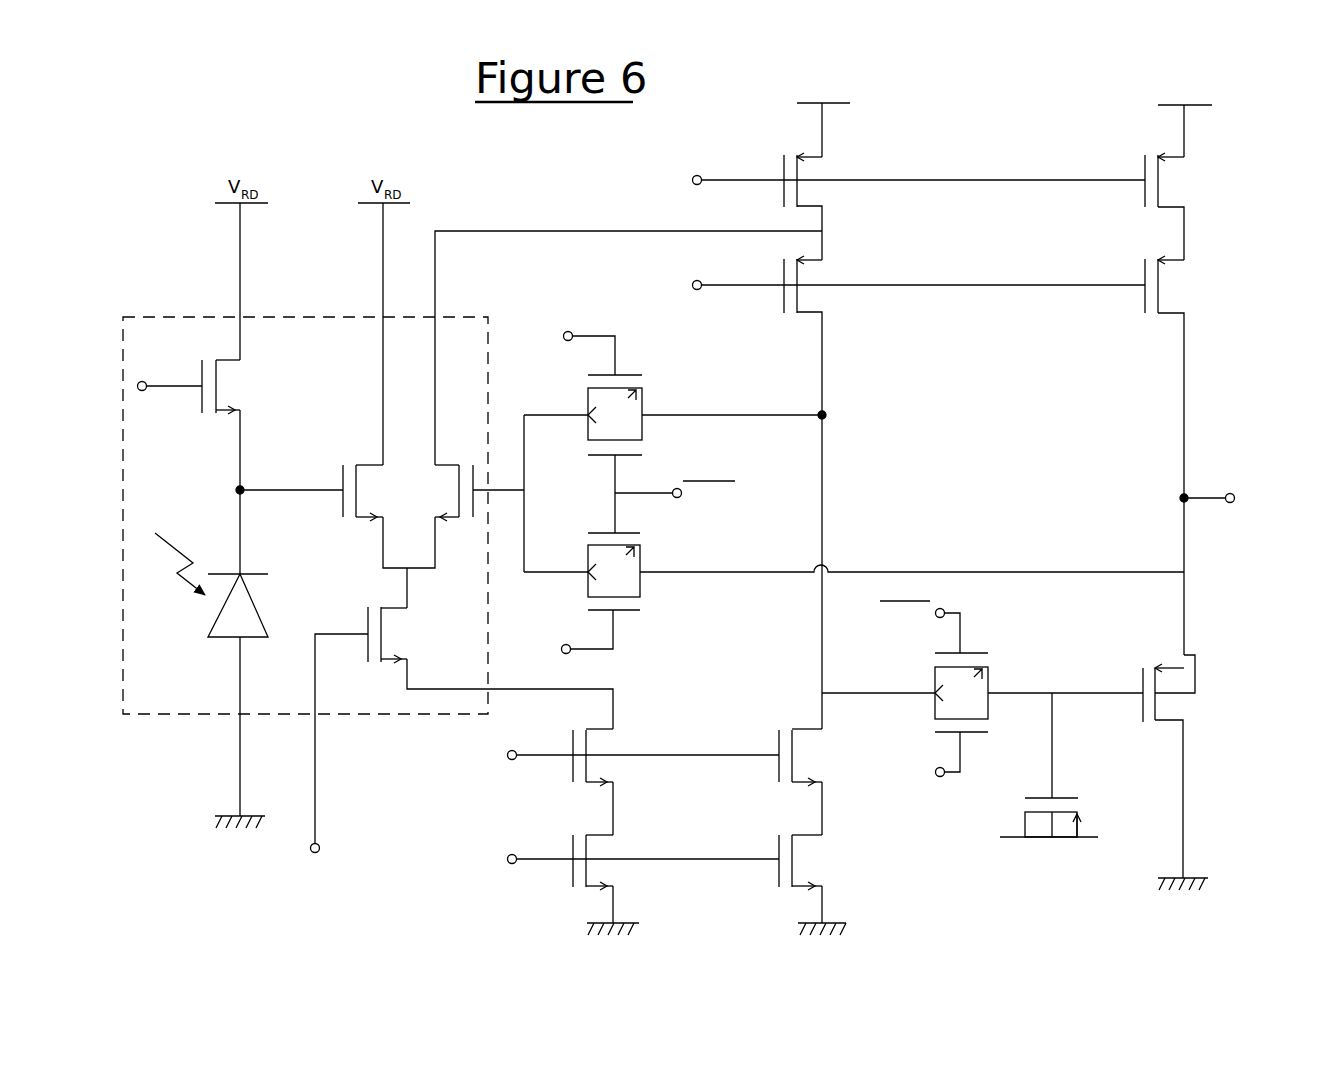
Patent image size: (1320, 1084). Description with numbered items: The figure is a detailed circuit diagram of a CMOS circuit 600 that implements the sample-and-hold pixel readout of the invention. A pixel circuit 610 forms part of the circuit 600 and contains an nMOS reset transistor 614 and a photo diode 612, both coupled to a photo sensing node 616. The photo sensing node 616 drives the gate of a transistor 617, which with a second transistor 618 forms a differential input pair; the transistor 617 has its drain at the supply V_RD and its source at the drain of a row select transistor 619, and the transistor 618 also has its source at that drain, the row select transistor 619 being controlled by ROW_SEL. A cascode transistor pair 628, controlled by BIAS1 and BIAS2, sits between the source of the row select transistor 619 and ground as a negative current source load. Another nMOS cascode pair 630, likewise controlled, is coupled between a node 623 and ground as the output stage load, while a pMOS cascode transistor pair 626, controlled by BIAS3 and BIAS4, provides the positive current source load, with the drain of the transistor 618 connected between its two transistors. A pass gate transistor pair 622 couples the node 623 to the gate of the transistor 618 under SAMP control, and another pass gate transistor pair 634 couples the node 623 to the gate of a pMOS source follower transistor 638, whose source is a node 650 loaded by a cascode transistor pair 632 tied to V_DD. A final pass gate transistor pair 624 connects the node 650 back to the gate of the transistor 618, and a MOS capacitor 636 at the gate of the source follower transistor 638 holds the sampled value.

The CMOS circuit 600 is at (320, 113).
The pixel circuit 610 is at (165, 317).
The photo diode 612 is at (250, 618).
The nMOS reset transistor 614 is at (247, 386).
The photo sensing node 616 is at (240, 490).
The transistor 617 is at (332, 466).
The second differential input paired transistor 618 is at (454, 538).
The row select transistor 619 is at (374, 680).
The pass gate transistor pair 622 is at (672, 393).
The node 623 is at (822, 415).
The pass gate transistor pair 624 is at (663, 593).
The pMOS cascode transistor pair 626 is at (872, 158).
The cascode transistor pair 628 is at (652, 883).
The cascode pair of nMOS transistors 630 is at (858, 857).
The cascode transistor pair 632 is at (1118, 158).
The pass gate transistor pair 634 is at (1010, 663).
The MOS capacitor 636 is at (1107, 817).
The pMOS source follower transistor 638 is at (1208, 715).
The node 650 is at (1184, 498).